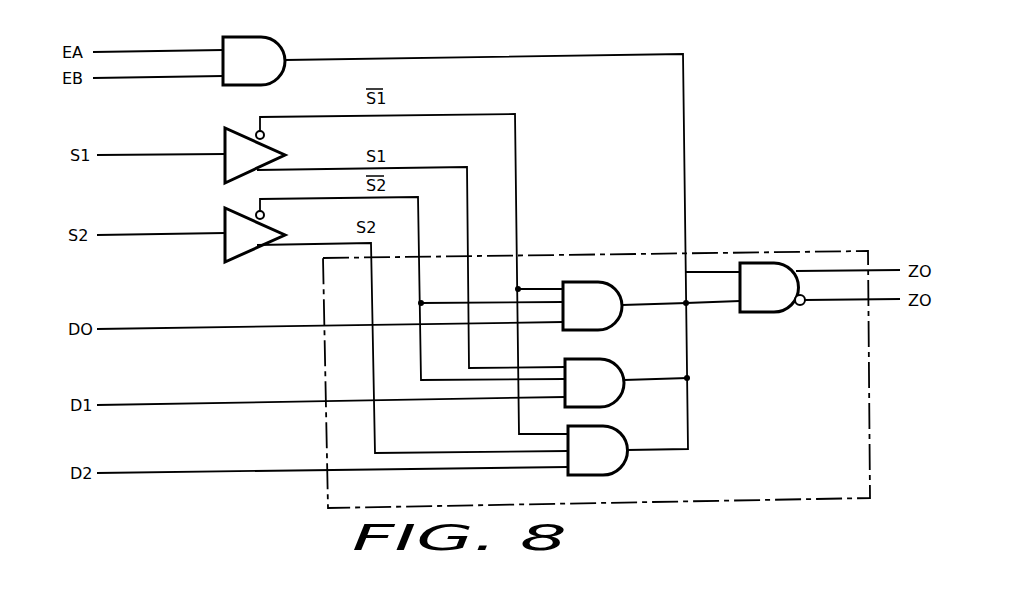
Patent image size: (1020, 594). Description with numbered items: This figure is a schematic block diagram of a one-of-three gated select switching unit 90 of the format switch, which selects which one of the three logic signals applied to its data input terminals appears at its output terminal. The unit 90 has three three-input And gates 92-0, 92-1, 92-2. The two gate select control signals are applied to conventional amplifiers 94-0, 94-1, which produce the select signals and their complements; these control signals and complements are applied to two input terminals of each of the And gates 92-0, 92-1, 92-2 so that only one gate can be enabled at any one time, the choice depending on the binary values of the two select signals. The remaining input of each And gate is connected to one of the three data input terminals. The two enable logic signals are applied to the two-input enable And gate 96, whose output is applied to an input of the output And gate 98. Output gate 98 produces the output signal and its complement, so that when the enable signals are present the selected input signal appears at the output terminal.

The switching unit 90 is at (847, 481).
The And gate 92-0 is at (605, 283).
The And gate 92-1 is at (608, 360).
The And gate 92-2 is at (608, 427).
The amplifier 94-0 is at (277, 152).
The amplifier 94-1 is at (277, 231).
The enable And gate 96 is at (279, 41).
The output And gate 98 is at (768, 312).